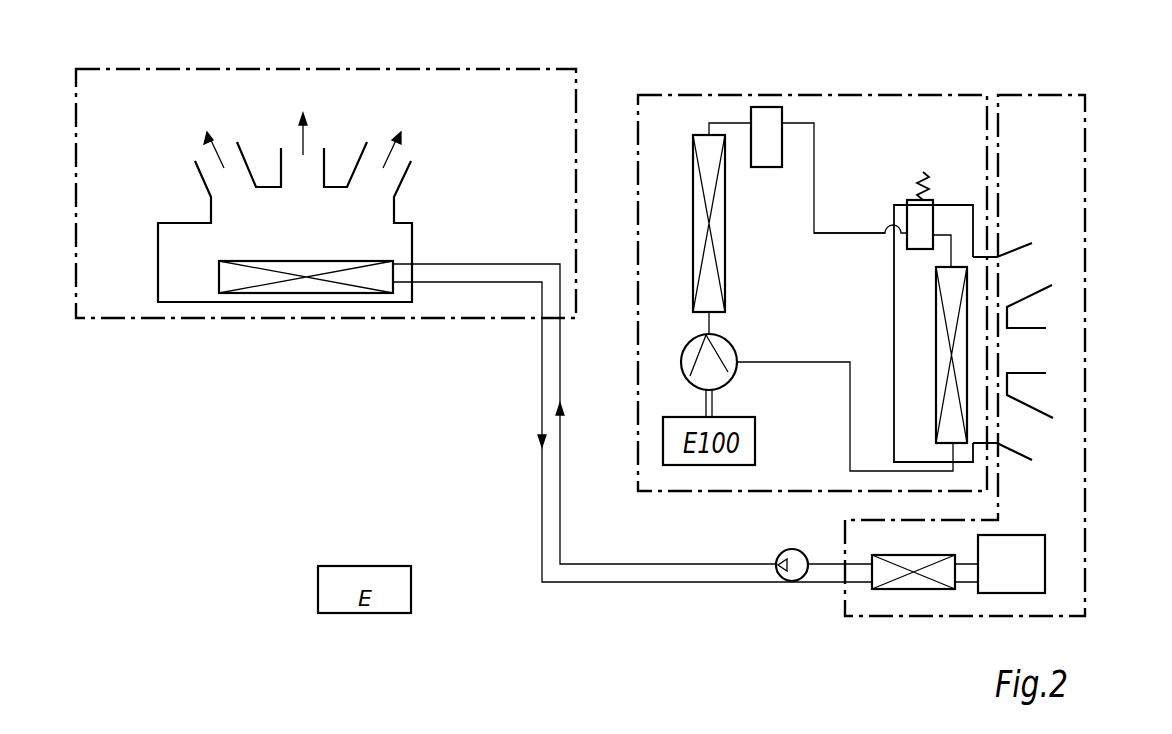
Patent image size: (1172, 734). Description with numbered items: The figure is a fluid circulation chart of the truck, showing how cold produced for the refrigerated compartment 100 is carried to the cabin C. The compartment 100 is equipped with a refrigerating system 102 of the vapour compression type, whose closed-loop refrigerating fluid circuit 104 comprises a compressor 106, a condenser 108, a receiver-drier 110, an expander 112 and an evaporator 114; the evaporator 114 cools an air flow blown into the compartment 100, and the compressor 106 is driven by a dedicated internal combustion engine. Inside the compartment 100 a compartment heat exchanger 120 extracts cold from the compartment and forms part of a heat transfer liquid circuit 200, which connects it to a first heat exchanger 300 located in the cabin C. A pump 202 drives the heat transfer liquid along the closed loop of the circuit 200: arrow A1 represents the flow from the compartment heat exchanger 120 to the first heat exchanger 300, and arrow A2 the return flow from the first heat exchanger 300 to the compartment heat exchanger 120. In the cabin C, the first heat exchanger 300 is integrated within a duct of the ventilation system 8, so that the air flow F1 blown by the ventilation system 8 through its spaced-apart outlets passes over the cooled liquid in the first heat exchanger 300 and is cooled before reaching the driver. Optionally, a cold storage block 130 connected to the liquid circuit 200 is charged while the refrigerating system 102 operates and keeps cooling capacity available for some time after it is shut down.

The cabin C is at (408, 68).
The ventilation system 8 is at (180, 264).
The first heat exchanger 300 is at (300, 286).
The air flow F1 is at (416, 138).
The arrow A1 is at (571, 405).
The arrow A2 is at (529, 446).
The heat transfer liquid circuit 200 is at (534, 506).
The refrigerated compartment 100 is at (1022, 95).
The refrigerating system 102 is at (846, 95).
The refrigerating fluid circuit 104 is at (841, 226).
The compressor 106 is at (714, 368).
The condenser 108 is at (700, 146).
The receiver-drier 110 is at (768, 117).
The expander 112 is at (918, 224).
The evaporator 114 is at (960, 430).
The compartment heat exchanger 120 is at (910, 591).
The cold storage block 130 is at (1023, 565).
The pump 202 is at (791, 553).